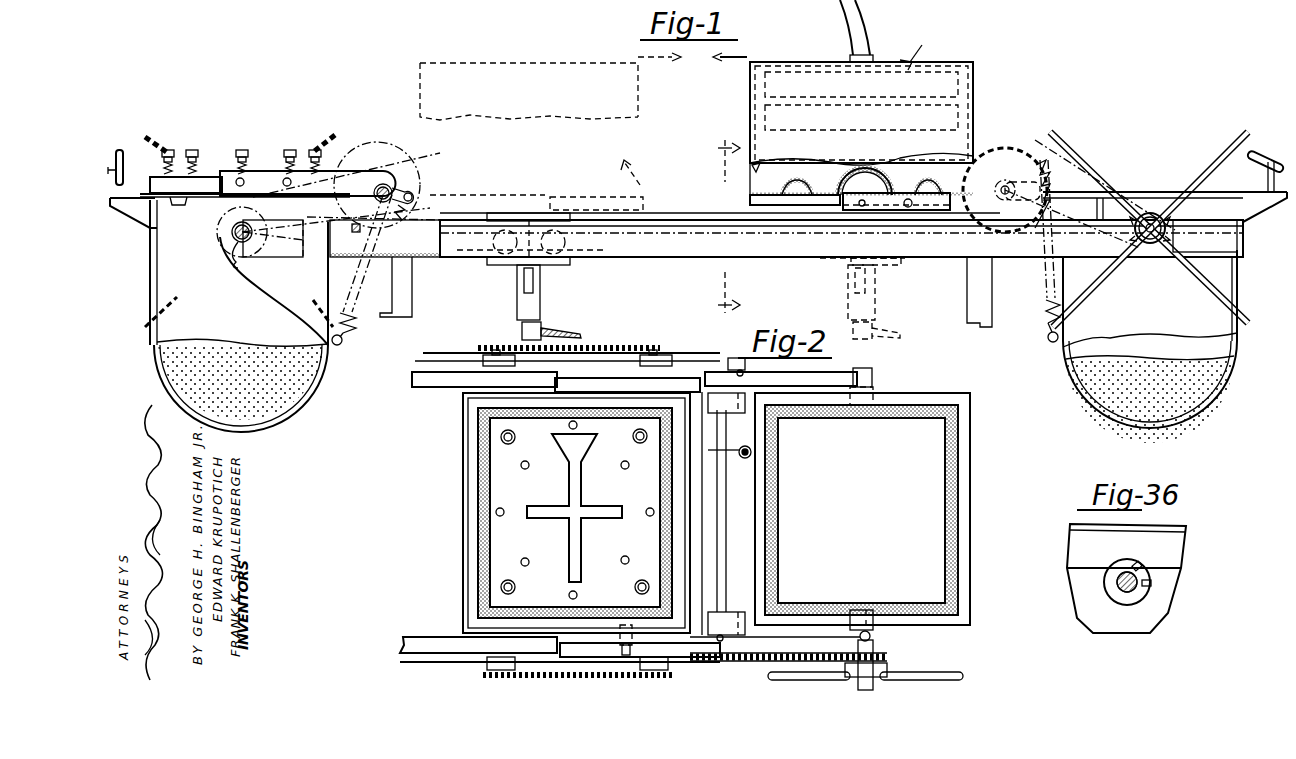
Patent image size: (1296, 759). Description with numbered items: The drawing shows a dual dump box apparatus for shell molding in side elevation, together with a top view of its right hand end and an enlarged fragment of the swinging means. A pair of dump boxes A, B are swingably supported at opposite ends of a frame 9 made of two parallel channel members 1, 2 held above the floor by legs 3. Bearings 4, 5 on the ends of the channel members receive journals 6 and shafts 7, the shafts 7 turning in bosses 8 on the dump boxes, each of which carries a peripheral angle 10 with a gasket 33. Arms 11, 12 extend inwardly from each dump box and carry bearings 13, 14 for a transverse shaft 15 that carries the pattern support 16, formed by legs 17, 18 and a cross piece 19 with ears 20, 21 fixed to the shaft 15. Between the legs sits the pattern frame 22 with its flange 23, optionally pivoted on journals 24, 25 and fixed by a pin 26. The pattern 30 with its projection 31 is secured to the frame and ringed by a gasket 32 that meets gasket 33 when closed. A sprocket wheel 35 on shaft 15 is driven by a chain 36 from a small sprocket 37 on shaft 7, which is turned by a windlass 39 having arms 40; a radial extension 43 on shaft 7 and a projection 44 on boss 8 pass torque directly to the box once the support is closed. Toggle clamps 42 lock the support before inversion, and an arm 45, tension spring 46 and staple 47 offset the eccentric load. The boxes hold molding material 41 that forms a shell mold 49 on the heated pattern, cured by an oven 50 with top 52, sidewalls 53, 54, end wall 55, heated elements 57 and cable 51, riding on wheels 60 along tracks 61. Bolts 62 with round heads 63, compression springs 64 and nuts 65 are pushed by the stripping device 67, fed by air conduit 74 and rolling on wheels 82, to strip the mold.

In FIG. 1, the channel member 1 is at (742, 246).
In FIG. 2, the channel member 1 is at (396, 642).
In FIG. 2, the channel member 2 is at (440, 387).
In FIG. 1, the legs 3 is at (413, 306).
In FIG. 1, the bearings 4 is at (721, 234).
In FIG. 2, the bearings 4 is at (875, 388).
In FIG. 1, the bearings 5 is at (242, 237).
In FIG. 2, the bearings 5 is at (876, 645).
In FIG. 2, the journals 6 is at (868, 368).
In FIG. 2, the shaft 7 is at (870, 636).
In FIG. 36, the shaft 7 is at (1120, 588).
In FIG. 2, the boss 8 is at (876, 630).
In FIG. 36, the boss 8 is at (1104, 584).
In FIG. 1, the frame 9 is at (656, 258).
In FIG. 2, the frame 9 is at (430, 639).
In FIG. 1, the angle 10 is at (341, 205).
In FIG. 36, the angle 10 is at (1073, 546).
In FIG. 2, the arm 11 is at (806, 384).
In FIG. 2, the arm 12 is at (740, 612).
In FIG. 2, the bearing 13 is at (725, 413).
In FIG. 2, the bearing 14 is at (728, 612).
In FIG. 1, the transverse shaft 15 is at (1008, 185).
In FIG. 2, the transverse shaft 15 is at (722, 540).
In FIG. 1, the pattern support 16 is at (269, 170).
In FIG. 2, the pattern support 16 is at (460, 474).
In FIG. 2, the leg 17 is at (682, 383).
In FIG. 2, the leg 18 is at (675, 658).
In FIG. 2, the cross piece 19 is at (700, 550).
In FIG. 2, the ear 20 is at (728, 365).
In FIG. 2, the ear 21 is at (728, 640).
In FIG. 2, the pattern frame 22 is at (469, 548).
In FIG. 2, the flange 23 is at (464, 568).
In FIG. 2, the journal 24 is at (568, 388).
In FIG. 2, the journal 25 is at (578, 634).
In FIG. 1, the pin 26 is at (909, 208).
In FIG. 2, the pin 26 is at (622, 648).
In FIG. 1, the pattern 30 is at (815, 192).
In FIG. 2, the pattern 30 is at (618, 496).
In FIG. 1, the projection 31 is at (872, 182).
In FIG. 2, the projection 31 is at (582, 456).
In FIG. 1, the gasket 32 is at (155, 180).
In FIG. 2, the gasket 32 is at (479, 527).
In FIG. 1, the gasket 33 is at (133, 218).
In FIG. 2, the gasket 33 is at (952, 472).
In FIG. 1, the sprocket wheel 35 is at (410, 150).
In FIG. 2, the sprocket wheel 35 is at (732, 661).
In FIG. 1, the chain 36 is at (1047, 182).
In FIG. 2, the chain 36 is at (780, 673).
In FIG. 1, the sprocket 37 is at (1133, 230).
In FIG. 2, the sprocket 37 is at (887, 668).
In FIG. 1, the windlass 39 is at (1152, 245).
In FIG. 2, the windlass 39 is at (963, 674).
In FIG. 1, the arms 40 is at (1090, 166).
In FIG. 1, the molding material 41 is at (185, 345).
In FIG. 1, the toggle clamps 42 is at (119, 145).
In FIG. 36, the radial extension 43 is at (1152, 584).
In FIG. 2, the projection 44 is at (852, 626).
In FIG. 36, the projection 44 is at (1140, 563).
In FIG. 2, the arm 45 is at (744, 459).
In FIG. 1, the tension spring 46 is at (350, 332).
In FIG. 1, the staple 47 is at (340, 347).
In FIG. 1, the shell mold 49 is at (852, 163).
In FIG. 1, the oven 50 is at (484, 62).
In FIG. 1, the flexible cable 51 is at (855, 18).
In FIG. 1, the top 52 is at (787, 63).
In FIG. 1, the lateral sidewall 53 is at (822, 155).
In FIG. 1, the lateral sidewall 54 is at (785, 179).
In FIG. 1, the end wall 55 is at (749, 166).
In FIG. 1, the electrically heated elements 57 is at (966, 80).
In FIG. 2, the wheels 60 is at (488, 355).
In FIG. 1, the tracks 61 is at (700, 214).
In FIG. 2, the tracks 61 is at (426, 353).
In FIG. 1, the bolts 62 is at (238, 160).
In FIG. 1, the round heads 63 is at (186, 208).
In FIG. 2, the round heads 63 is at (522, 469).
In FIG. 1, the compression springs 64 is at (170, 150).
In FIG. 1, the nuts 65 is at (196, 150).
In FIG. 1, the stripping device 67 is at (514, 302).
In FIG. 1, the flexible air conduit 74 is at (560, 333).
In FIG. 1, the wheels 82 is at (473, 262).
In FIG. 1, the dump box A is at (239, 322).
In FIG. 1, the dump box B is at (1078, 405).
In FIG. 2, the dump box B is at (980, 548).
In FIG. 36, the dump box B is at (1188, 556).